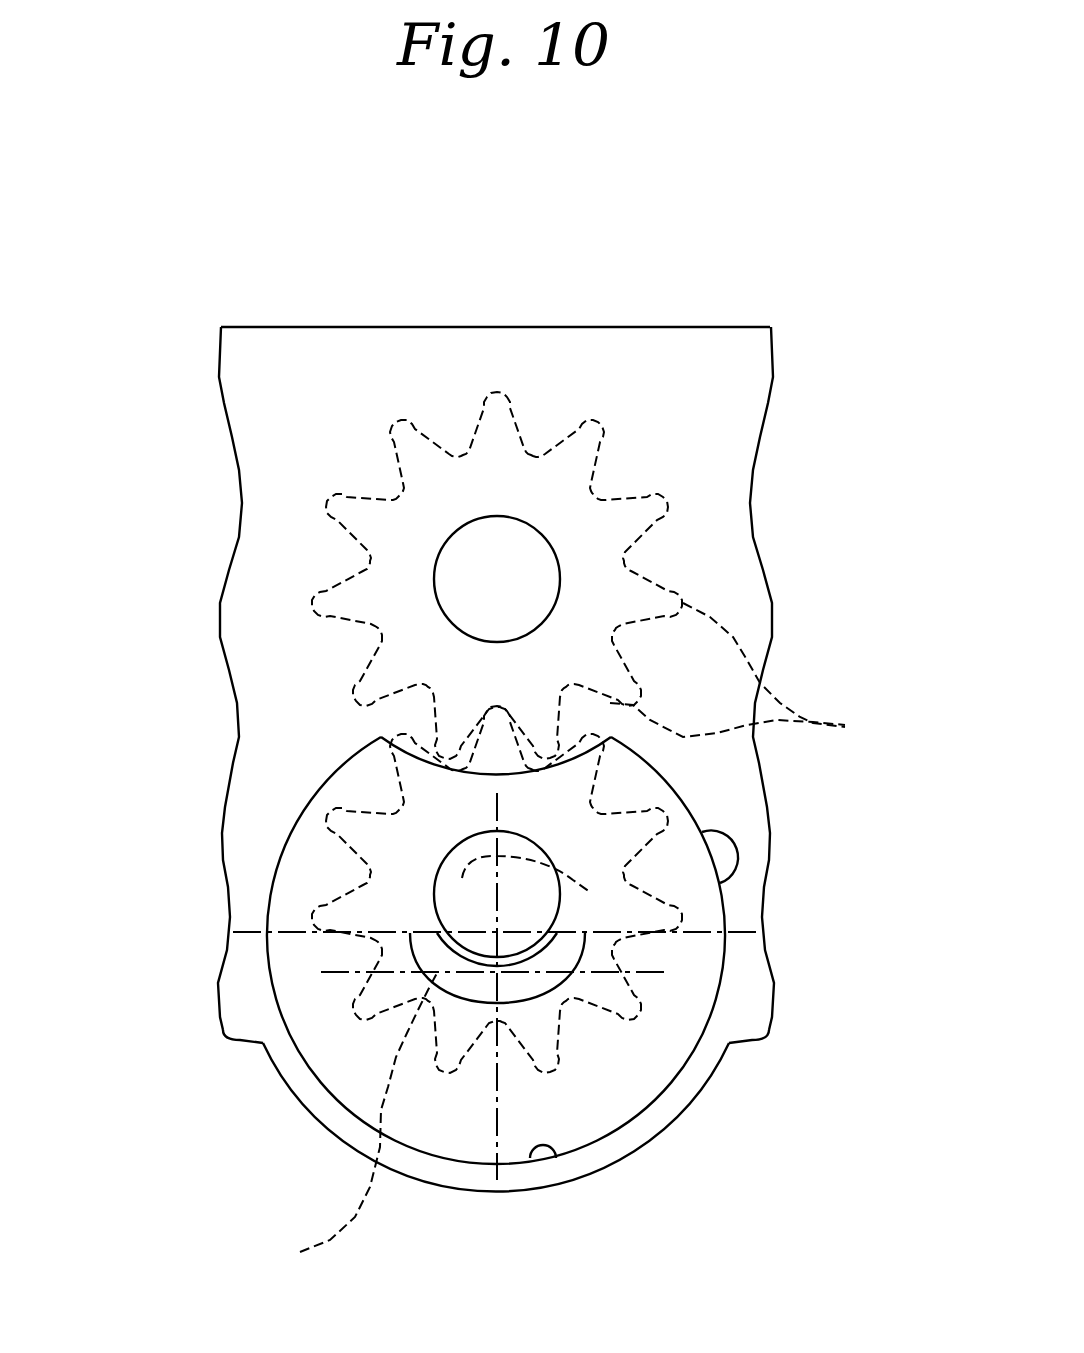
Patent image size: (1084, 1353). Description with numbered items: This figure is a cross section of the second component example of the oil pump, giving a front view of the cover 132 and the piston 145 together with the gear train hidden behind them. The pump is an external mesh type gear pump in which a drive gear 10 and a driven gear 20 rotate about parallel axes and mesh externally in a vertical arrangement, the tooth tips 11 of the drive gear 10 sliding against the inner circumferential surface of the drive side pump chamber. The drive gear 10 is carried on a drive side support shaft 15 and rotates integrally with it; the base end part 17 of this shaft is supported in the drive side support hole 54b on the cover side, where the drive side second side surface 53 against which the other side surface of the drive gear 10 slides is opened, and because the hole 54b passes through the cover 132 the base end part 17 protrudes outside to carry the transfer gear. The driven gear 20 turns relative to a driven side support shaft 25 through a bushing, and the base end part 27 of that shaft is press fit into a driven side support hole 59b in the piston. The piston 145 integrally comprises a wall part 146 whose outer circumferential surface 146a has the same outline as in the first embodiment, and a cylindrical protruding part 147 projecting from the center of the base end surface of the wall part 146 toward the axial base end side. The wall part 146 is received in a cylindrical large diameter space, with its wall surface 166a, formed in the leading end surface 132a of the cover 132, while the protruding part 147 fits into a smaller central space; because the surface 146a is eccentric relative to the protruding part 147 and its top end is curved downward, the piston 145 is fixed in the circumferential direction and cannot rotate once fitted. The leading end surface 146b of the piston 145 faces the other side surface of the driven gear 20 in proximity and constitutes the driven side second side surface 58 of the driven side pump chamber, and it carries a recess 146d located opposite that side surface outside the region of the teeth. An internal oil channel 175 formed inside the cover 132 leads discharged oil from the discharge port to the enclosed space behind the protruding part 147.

The drive gear 10 is at (205, 526).
The tooth tips 11 is at (748, 678).
The drive side support shaft 15 is at (497, 491).
The base end part 17 is at (497, 579).
The driven gear 20 is at (422, 986).
The driven side support shaft 25 is at (374, 889).
The base end part 27 is at (526, 874).
The drive side second side surface 53 is at (556, 340).
The drive side support hole 54b is at (708, 539).
The driven side support hole 59b is at (505, 873).
The cover 132 is at (496, 618).
The leading end surface 132a is at (829, 404).
The piston 145 is at (498, 964).
The wall part 146 is at (566, 964).
The outer circumferential surface 146a is at (836, 904).
The leading end surface 146b is at (566, 1111).
The driven side second side surface 58 is at (496, 1036).
The recess 146d is at (483, 1104).
The cylindrical protruding part 147 is at (333, 1129).
The tab 166a is at (625, 1203).
The internal oil channel 175 is at (810, 835).